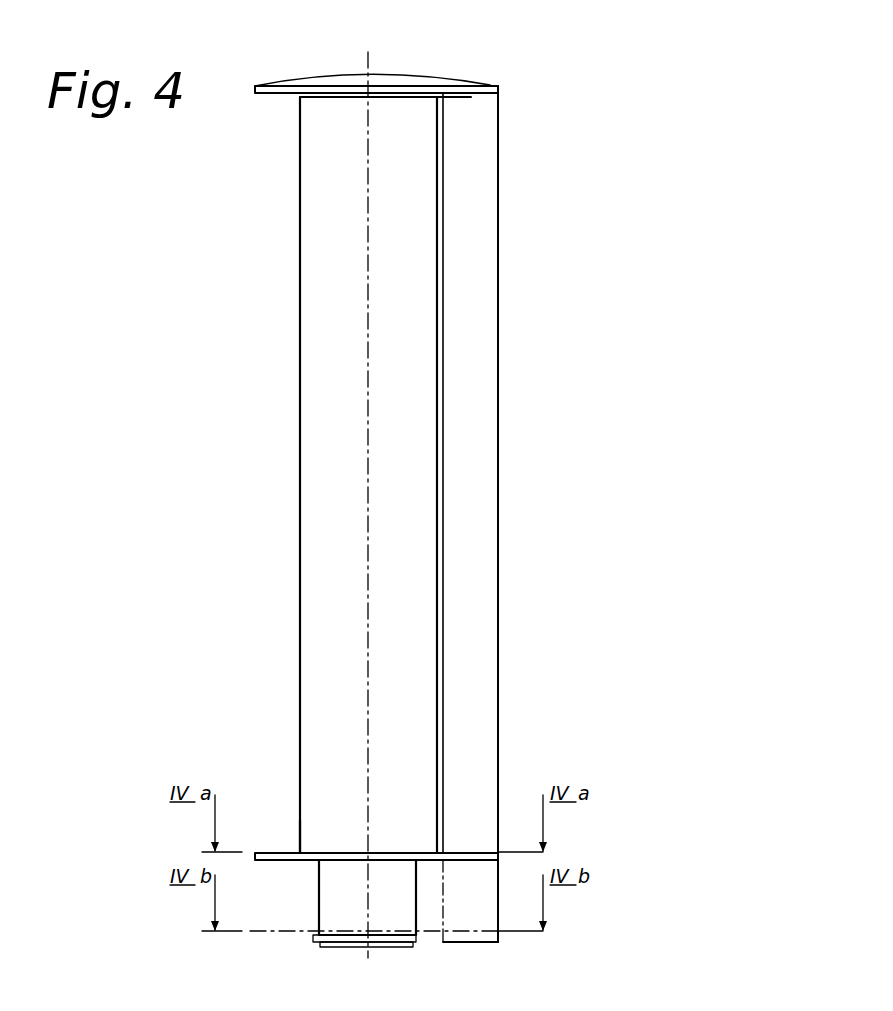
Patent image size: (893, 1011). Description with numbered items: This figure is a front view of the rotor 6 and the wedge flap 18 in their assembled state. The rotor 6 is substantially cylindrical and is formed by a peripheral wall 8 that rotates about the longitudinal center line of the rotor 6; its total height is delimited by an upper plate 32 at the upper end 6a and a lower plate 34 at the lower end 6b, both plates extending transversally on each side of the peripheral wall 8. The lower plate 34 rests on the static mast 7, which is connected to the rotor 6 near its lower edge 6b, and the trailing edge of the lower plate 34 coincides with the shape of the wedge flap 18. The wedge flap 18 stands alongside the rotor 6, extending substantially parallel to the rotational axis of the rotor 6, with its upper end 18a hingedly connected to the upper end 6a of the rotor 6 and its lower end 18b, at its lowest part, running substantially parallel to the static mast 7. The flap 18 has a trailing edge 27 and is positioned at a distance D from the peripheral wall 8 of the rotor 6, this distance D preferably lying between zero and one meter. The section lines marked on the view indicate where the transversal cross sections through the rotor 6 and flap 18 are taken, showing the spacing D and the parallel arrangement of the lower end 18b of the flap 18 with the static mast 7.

The rotor 6 is at (325, 508).
The upper end of the rotor 6a is at (296, 97).
The lower end of the rotor 6b is at (296, 853).
The static mast 7 is at (334, 917).
The peripheral wall 8 is at (300, 368).
The wedge flap 18 is at (482, 322).
The upper end of the flap 18a is at (487, 83).
The lower end of the flap 18b is at (470, 942).
The trailing edge 27 is at (498, 175).
The upper plate 32 is at (303, 78).
The lower plate 34 is at (280, 858).
The distance D is at (438, 110).